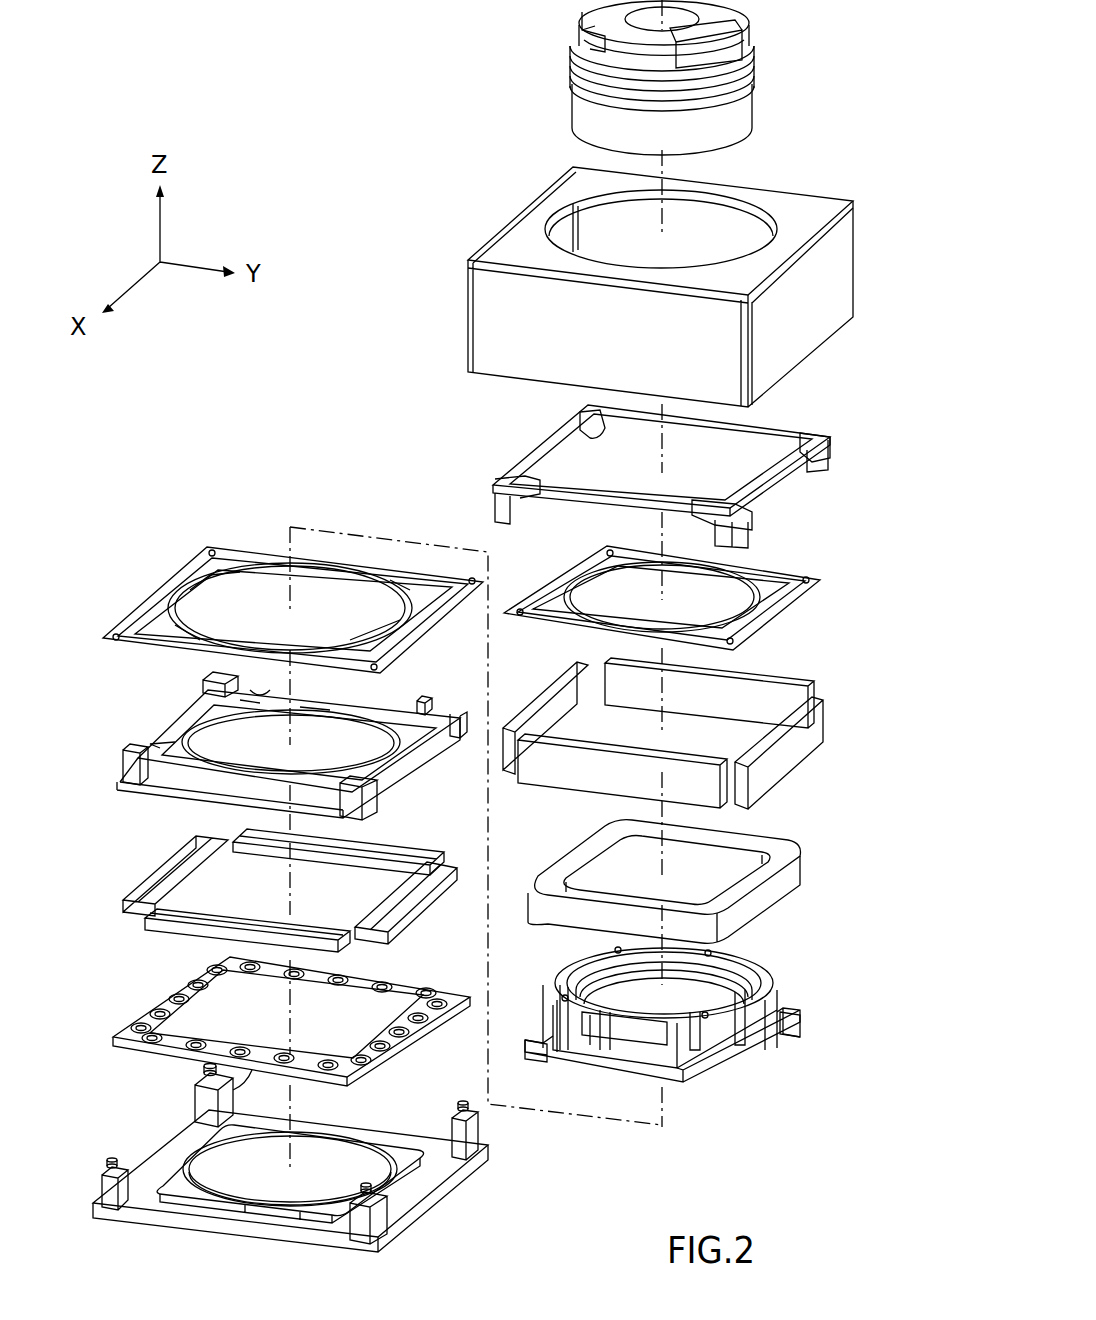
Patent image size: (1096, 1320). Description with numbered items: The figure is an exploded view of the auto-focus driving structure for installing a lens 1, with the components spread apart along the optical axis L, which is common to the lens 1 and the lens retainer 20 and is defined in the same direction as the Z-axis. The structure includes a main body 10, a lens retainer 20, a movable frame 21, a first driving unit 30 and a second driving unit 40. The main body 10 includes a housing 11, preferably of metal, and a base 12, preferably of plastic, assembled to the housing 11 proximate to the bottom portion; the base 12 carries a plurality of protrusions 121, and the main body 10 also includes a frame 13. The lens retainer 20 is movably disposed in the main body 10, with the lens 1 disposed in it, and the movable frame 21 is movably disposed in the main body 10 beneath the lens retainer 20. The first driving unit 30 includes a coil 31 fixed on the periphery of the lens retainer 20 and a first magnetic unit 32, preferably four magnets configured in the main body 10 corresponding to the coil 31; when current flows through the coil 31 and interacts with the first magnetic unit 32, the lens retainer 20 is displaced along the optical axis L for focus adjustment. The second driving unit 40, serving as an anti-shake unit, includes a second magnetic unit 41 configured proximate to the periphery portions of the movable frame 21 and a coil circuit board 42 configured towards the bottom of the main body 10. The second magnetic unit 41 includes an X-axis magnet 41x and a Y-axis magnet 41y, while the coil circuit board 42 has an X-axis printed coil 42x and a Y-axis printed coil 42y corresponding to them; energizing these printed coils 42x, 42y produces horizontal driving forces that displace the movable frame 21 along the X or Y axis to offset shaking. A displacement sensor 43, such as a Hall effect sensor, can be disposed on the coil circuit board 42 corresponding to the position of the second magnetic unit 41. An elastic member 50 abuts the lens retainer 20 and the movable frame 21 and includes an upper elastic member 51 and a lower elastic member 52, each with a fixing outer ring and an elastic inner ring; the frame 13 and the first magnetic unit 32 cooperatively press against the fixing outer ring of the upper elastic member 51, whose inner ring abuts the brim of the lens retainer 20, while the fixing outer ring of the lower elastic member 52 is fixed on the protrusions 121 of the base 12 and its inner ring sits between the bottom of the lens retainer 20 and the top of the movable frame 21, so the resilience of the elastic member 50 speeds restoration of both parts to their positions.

The lens 1 is at (552, 56).
The main body 10 is at (473, 709).
The housing 11 is at (505, 322).
The base 12 is at (336, 1176).
The protrusions 121 is at (473, 1133).
The frame 13 is at (540, 450).
The lens retainer 20 is at (725, 1090).
The movable frame 21 is at (172, 720).
The first driving unit 30 is at (703, 800).
The coil 31 is at (797, 868).
The first magnetic unit 32 is at (788, 752).
The second driving unit 40 is at (271, 953).
The second magnetic unit 41 is at (267, 865).
The X-axis magnet 41x is at (188, 848).
The Y-axis magnet 41y is at (210, 913).
The coil circuit board 42 is at (271, 1022).
The X-axis printed coil 42x is at (178, 990).
The Y-axis printed coil 42y is at (212, 1050).
The displacement sensor 43 is at (198, 1110).
The elastic member 50 is at (488, 572).
The upper elastic member 51 is at (813, 582).
The lower elastic member 52 is at (182, 592).
The optical axis L is at (673, 7).